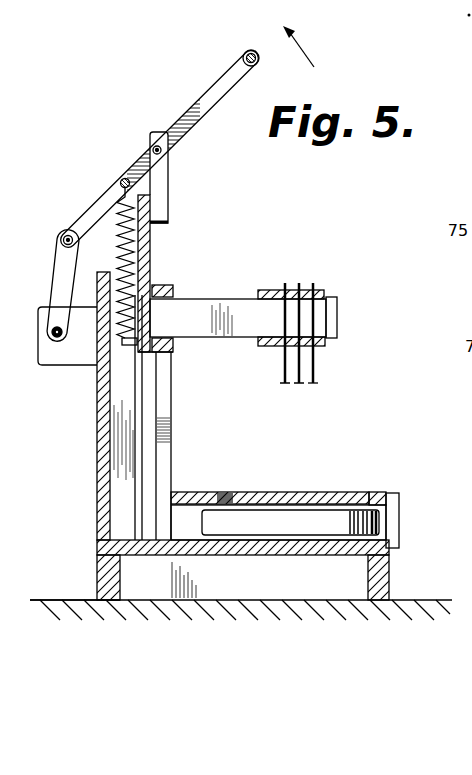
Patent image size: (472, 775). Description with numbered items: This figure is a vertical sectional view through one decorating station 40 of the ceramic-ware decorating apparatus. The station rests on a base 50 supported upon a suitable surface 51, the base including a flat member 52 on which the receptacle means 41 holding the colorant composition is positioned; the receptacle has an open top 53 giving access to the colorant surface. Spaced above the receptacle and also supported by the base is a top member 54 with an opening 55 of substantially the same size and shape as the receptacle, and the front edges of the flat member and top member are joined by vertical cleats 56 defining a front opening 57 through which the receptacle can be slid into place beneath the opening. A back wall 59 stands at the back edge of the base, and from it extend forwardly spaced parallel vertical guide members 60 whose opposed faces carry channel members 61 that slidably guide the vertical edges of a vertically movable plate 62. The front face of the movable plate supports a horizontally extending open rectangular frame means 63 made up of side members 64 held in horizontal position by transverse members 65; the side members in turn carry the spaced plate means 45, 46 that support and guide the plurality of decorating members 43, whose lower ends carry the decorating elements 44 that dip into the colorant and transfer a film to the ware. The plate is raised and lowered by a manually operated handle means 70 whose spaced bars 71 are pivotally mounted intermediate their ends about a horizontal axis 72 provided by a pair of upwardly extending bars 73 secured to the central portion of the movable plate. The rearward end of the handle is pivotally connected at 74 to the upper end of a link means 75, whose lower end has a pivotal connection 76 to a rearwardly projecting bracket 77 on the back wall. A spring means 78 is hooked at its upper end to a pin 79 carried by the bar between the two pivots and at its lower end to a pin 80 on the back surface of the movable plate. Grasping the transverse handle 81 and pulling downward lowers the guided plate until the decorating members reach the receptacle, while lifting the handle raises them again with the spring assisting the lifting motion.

The decorating station 40 is at (306, 272).
The receptacle means 41 is at (237, 530).
The decorating members 43 is at (313, 373).
The decorating elements 44 is at (286, 386).
The plate means 45 is at (324, 341).
The plate means 46 is at (319, 291).
The base 50 is at (390, 585).
The surface 51 is at (66, 600).
The flat member 52 is at (305, 557).
The open top 53 is at (286, 506).
The top member 54 is at (192, 494).
The opening 55 is at (364, 495).
The vertical cleats 56 is at (400, 504).
The front opening 57 is at (382, 527).
The back wall 59 is at (107, 499).
The vertical guide members 60 is at (167, 285).
The channel members 61 is at (142, 517).
The movable plate 62 is at (150, 241).
The frame means 63 is at (334, 310).
The side members 64 is at (248, 308).
The transverse members 65 is at (175, 296).
The handle means 70 is at (205, 80).
The bars 71 is at (217, 98).
The horizontal axis 72 is at (158, 146).
The upwardly extending bars 73 is at (162, 186).
The pivotal connection 74 is at (66, 235).
The link means 75 is at (62, 268).
The pivotal connection 76 is at (57, 338).
The bracket 77 is at (72, 366).
The spring means 78 is at (118, 204).
The pin 79 is at (125, 178).
The pin 80 is at (124, 350).
The transverse handle 81 is at (251, 50).